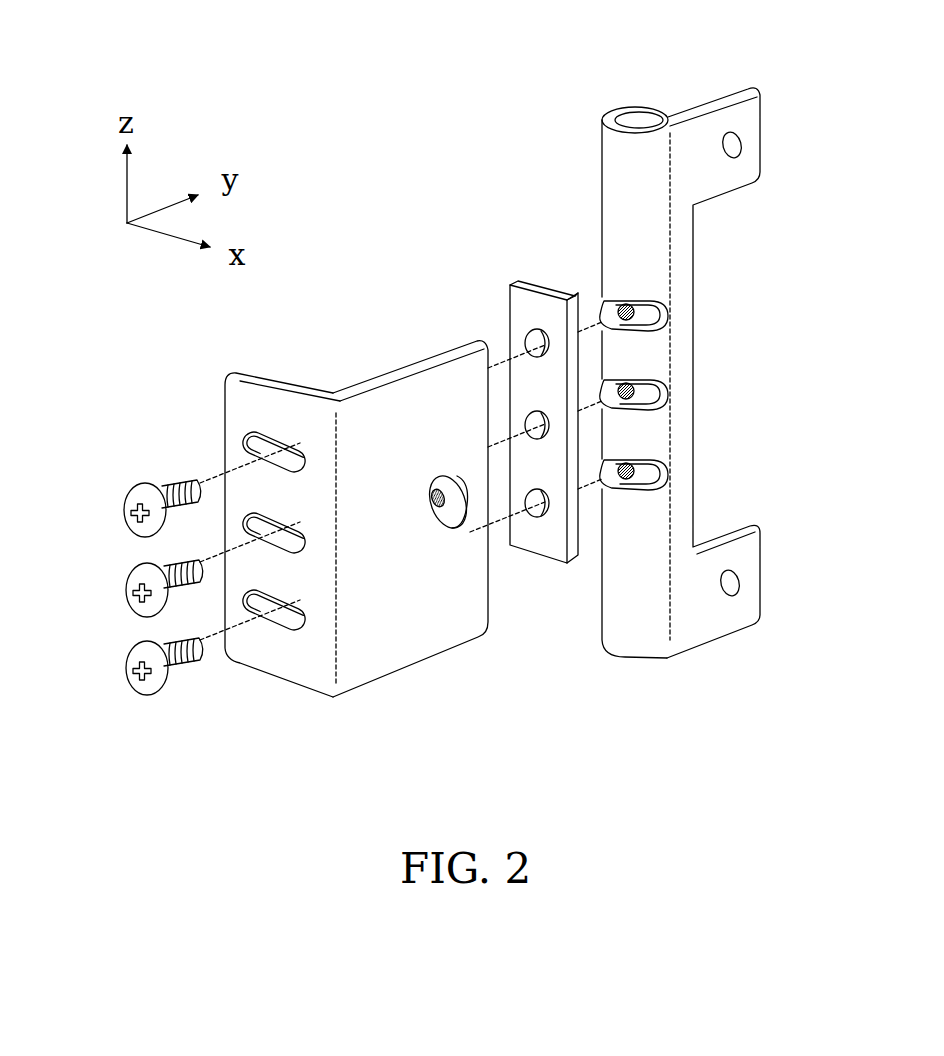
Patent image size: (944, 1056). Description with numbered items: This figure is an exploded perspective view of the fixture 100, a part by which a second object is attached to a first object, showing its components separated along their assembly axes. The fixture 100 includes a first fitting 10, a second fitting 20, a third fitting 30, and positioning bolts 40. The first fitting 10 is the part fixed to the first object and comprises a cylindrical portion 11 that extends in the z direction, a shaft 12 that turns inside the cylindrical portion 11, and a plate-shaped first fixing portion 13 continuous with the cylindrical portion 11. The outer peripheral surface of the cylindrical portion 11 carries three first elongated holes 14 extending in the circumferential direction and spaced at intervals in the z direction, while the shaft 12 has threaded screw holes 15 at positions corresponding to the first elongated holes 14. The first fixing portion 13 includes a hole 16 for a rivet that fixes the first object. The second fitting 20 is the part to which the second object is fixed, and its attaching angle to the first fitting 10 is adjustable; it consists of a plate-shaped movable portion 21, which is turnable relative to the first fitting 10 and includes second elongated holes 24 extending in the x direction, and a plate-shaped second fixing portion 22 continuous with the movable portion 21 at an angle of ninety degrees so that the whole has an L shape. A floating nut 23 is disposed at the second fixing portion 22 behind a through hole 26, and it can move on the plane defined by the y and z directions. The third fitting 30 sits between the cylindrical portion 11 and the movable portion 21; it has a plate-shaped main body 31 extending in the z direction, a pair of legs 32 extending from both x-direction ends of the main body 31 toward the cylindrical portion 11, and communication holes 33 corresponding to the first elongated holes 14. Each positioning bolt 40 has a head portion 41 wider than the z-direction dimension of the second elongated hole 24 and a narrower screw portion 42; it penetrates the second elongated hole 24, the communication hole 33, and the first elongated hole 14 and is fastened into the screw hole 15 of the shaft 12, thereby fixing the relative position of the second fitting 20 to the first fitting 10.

The fixture 100 is at (376, 136).
The first fitting 10 is at (709, 98).
The cylindrical portion 11 is at (617, 163).
The shaft 12 is at (638, 114).
The first fixing portion 13 is at (727, 178).
The first elongated hole 14 is at (667, 322).
The screw hole 15 is at (632, 300).
The hole 16 is at (741, 150).
The second fitting 20 is at (360, 380).
The movable portion 21 is at (298, 672).
The second fixing portion 22 is at (415, 655).
The floating nut 23 is at (444, 523).
The second elongated hole 24 is at (240, 445).
The through hole 26 is at (468, 518).
The third fitting 30 is at (538, 285).
The main body 31 is at (518, 305).
The legs 32 is at (520, 282).
The communication hole 33 is at (525, 345).
The positioning bolt 40 is at (141, 488).
The head portion 41 is at (128, 500).
The screw portion 42 is at (175, 492).